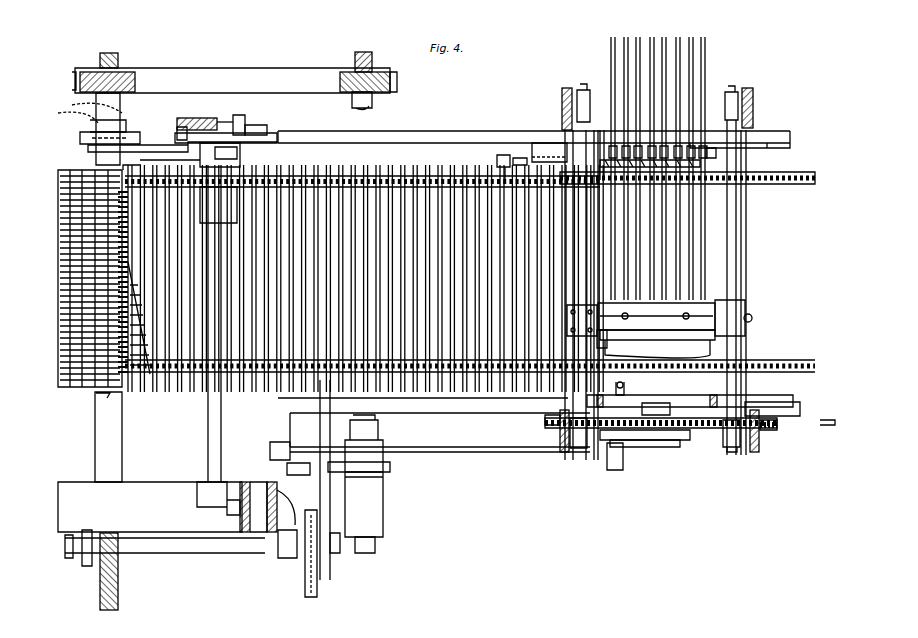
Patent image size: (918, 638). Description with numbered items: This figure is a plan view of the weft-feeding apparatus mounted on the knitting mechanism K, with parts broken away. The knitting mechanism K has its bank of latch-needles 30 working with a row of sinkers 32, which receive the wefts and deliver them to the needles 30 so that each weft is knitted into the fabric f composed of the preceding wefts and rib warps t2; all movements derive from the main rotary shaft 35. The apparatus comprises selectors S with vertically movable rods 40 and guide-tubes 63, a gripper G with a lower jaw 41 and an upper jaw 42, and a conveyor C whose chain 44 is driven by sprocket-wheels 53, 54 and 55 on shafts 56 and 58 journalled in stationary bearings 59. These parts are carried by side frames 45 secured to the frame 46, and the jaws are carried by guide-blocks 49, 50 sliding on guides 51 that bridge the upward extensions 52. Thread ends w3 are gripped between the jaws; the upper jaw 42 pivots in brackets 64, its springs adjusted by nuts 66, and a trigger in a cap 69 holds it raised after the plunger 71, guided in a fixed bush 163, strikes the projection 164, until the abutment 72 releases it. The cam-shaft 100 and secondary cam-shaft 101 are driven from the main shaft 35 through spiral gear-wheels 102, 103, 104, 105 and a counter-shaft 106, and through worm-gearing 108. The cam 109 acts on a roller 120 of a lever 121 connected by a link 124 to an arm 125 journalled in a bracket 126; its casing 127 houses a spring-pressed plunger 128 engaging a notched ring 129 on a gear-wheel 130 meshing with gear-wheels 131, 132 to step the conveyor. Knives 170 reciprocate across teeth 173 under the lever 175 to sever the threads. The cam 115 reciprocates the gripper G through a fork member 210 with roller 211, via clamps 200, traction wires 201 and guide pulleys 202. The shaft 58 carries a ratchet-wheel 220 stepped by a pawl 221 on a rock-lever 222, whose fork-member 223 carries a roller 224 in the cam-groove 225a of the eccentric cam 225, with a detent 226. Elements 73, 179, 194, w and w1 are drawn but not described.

The latch-needles 30 is at (138, 327).
The sinkers 32 is at (142, 347).
The main rotary shaft 35 is at (95, 430).
The vertically movable rods 40 is at (708, 146).
The lower jaw 41 is at (685, 302).
The upper jaw 42 is at (709, 281).
The chain 44 is at (293, 375).
The side frames 45 is at (476, 438).
The frame 46 is at (270, 572).
The guide-block 49 is at (730, 318).
The guide-block 50 is at (600, 335).
The guides 51 is at (578, 276).
The upward extensions 52 is at (555, 386).
The sprocket-wheels 53 is at (760, 360).
The sprocket-wheels 54 is at (585, 185).
The sprocket-wheels 55 is at (213, 385).
The shaft 56 is at (745, 250).
The shaft 58 is at (207, 452).
The stationary bearings 59 is at (820, 413).
The guide-tubes 63 is at (708, 148).
The brackets 64 is at (686, 334).
The nuts 66 is at (670, 330).
The cap 69 is at (582, 320).
The plunger 71 is at (630, 380).
The abutment 72 is at (604, 127).
The comb bar 73 is at (388, 164).
The cam-shaft 100 is at (373, 550).
The secondary cam-shaft 101 is at (340, 548).
The spiral gear-wheel 102 is at (135, 87).
The spiral gear-wheel 103 is at (118, 60).
The spiral gear-wheel 104 is at (357, 56).
The spiral gear-wheel 105 is at (345, 74).
The counter-shaft 106 is at (262, 70).
The worm-gearing 108 is at (118, 585).
The cam 109 is at (388, 467).
The cam 115 is at (315, 598).
The roller 120 is at (287, 466).
The lever 121 is at (304, 457).
The link 124 is at (528, 428).
The arm 125 is at (642, 440).
The bracket 126 is at (656, 409).
The casing 127 is at (620, 468).
The spring-pressed plunger 128 is at (595, 448).
The notched ring 129 is at (688, 440).
The gear-wheel 130 is at (662, 446).
The gear-wheel 131 is at (772, 430).
The gear-wheel 132 is at (562, 450).
The fixed bush 163 is at (630, 394).
The projection 164 is at (656, 316).
The knives 170 is at (709, 162).
The teeth 173 is at (707, 185).
The lever 175 is at (680, 366).
The bracket 179 is at (518, 156).
The hatched block 194 is at (714, 396).
The clamp 200 is at (753, 315).
The traction wires 201 is at (573, 448).
The guide pulleys 202 is at (753, 452).
The fork member 210 is at (370, 504).
The roller 211 is at (304, 575).
The ratchet-wheel 220 is at (202, 118).
The pawl 221 is at (239, 115).
The rock-lever 222 is at (172, 141).
The fork-member 223 is at (88, 150).
The roller 224 is at (80, 110).
The eccentric cam 225 is at (80, 135).
The cam-groove 225a is at (90, 124).
The detent 226 is at (268, 124).
The conveyor C is at (418, 380).
The gripper G is at (741, 296).
The knitting mechanism K is at (124, 167).
The selectors S is at (640, 75).
The fabric f is at (58, 297).
The rib warps t2 is at (62, 359).
The finger w is at (658, 149).
The finger w1 is at (667, 42).
The thread ends w3 is at (680, 238).